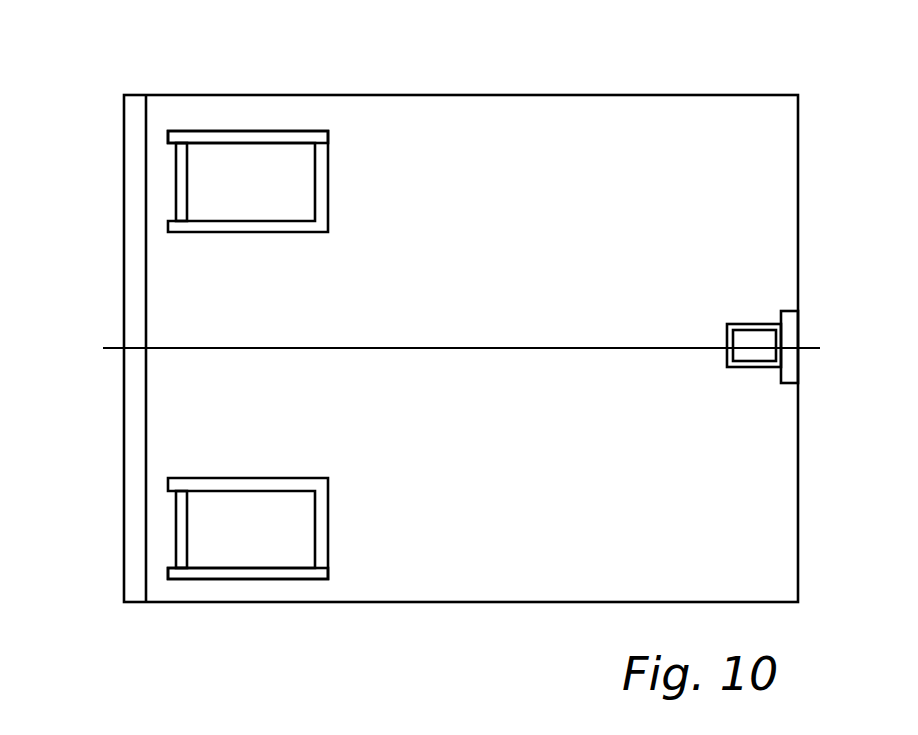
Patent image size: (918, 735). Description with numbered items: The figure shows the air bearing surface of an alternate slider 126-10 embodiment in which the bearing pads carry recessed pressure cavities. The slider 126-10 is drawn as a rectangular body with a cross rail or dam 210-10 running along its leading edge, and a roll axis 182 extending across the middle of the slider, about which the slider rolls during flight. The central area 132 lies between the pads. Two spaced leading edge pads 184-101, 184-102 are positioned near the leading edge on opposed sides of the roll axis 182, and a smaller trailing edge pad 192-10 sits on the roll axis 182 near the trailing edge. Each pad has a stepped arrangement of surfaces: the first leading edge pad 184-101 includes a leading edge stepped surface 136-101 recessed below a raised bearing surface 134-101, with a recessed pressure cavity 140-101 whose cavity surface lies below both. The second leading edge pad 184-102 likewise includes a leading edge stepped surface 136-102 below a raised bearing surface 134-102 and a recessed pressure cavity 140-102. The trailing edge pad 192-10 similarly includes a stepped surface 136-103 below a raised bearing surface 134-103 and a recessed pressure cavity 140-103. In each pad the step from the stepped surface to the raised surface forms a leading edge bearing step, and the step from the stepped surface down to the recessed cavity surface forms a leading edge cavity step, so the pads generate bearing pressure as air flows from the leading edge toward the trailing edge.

The slider 126-10 is at (632, 81).
The cross rail or dam 210-10 is at (131, 397).
The roll axis 182 is at (114, 347).
The interior chamber 132 is at (471, 298).
The raised bearing surface 134-101 is at (322, 205).
The leading edge stepped surface 136-101 is at (175, 158).
The leading edge pad 184-101 is at (281, 144).
The recessed pressure cavity 140-101 is at (250, 155).
The raised bearing surface 134-102 is at (326, 523).
The leading edge stepped surface 136-102 is at (182, 528).
The leading edge pad 184-102 is at (283, 579).
The recessed pressure cavity 140-102 is at (226, 533).
The raised bearing surface 134-103 is at (746, 368).
The leading edge stepped surface 136-103 is at (727, 340).
The recessed pressure cavity 140-103 is at (755, 345).
The trailing edge pad 192-10 is at (745, 324).